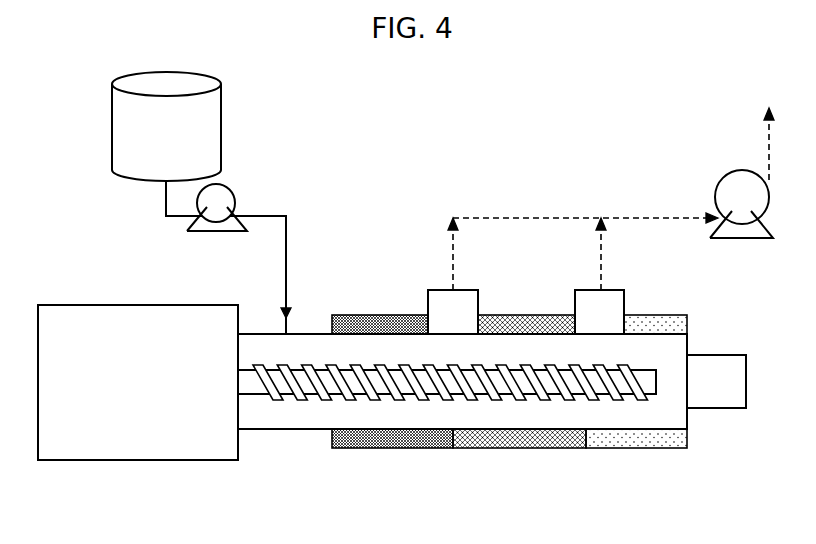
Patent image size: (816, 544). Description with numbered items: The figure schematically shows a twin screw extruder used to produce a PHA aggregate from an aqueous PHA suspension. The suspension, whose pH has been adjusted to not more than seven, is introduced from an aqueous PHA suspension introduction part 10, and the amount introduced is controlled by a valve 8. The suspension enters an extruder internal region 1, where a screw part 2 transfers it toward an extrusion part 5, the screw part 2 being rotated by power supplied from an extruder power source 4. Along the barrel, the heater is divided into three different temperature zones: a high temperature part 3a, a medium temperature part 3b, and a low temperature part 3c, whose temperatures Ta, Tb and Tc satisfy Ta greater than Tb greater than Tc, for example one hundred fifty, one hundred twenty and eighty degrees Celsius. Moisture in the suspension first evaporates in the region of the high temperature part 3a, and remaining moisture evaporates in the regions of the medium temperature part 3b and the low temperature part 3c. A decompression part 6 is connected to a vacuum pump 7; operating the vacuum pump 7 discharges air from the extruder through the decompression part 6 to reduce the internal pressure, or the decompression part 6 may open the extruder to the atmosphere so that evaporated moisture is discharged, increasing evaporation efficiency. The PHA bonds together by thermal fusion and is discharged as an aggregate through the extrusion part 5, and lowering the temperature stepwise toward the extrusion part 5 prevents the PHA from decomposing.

The extruder internal region 1 is at (266, 417).
The screw part 2 is at (312, 397).
The high temperature part 3a is at (350, 322).
The medium temperature part 3b is at (496, 322).
The low temperature part 3c is at (675, 322).
The extruder power source 4 is at (140, 453).
The extrusion part 5 is at (738, 382).
The decompression part 6 is at (443, 296).
The vacuum pump 7 is at (725, 188).
The valve 8 is at (230, 195).
The aqueous PHA suspension introduction part 10 is at (116, 130).